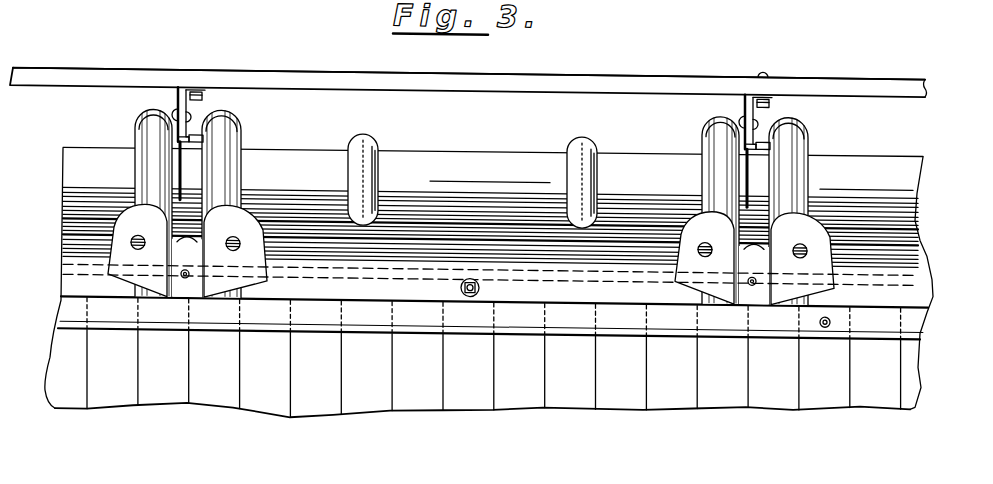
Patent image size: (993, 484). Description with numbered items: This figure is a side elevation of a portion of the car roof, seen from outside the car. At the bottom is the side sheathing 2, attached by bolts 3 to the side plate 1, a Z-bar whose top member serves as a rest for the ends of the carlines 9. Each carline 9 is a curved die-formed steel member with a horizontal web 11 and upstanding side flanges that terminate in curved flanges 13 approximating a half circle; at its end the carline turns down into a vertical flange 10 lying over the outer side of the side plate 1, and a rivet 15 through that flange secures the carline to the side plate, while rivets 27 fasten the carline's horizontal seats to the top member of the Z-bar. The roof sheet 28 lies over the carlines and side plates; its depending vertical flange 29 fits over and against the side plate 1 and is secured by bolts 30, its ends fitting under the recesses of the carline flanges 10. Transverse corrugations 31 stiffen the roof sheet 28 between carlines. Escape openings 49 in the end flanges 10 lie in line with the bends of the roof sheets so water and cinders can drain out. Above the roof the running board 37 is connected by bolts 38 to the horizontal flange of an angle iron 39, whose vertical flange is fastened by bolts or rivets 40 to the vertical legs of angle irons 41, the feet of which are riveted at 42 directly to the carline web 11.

The side plate 1 is at (915, 315).
The side sheathing 2 is at (468, 399).
The bolt 3 is at (826, 323).
The carline 9 is at (240, 168).
The vertical flange 10 is at (205, 269).
The horizontal web 11 is at (185, 168).
The curved flange 13 is at (140, 185).
The rivet 15 is at (184, 282).
The rivet 27 is at (183, 240).
The roof sheet 28 is at (455, 150).
The depending vertical flange 29 is at (490, 286).
The bolt 30 is at (478, 296).
The transverse corrugation 31 is at (368, 137).
The running board 37 is at (624, 62).
The bolt 38 is at (213, 51).
The angle iron 39 is at (205, 94).
The bolt or rivet 40 is at (172, 115).
The angle iron 41 is at (177, 104).
The rivet 42 is at (202, 140).
The escape opening 49 is at (134, 247).